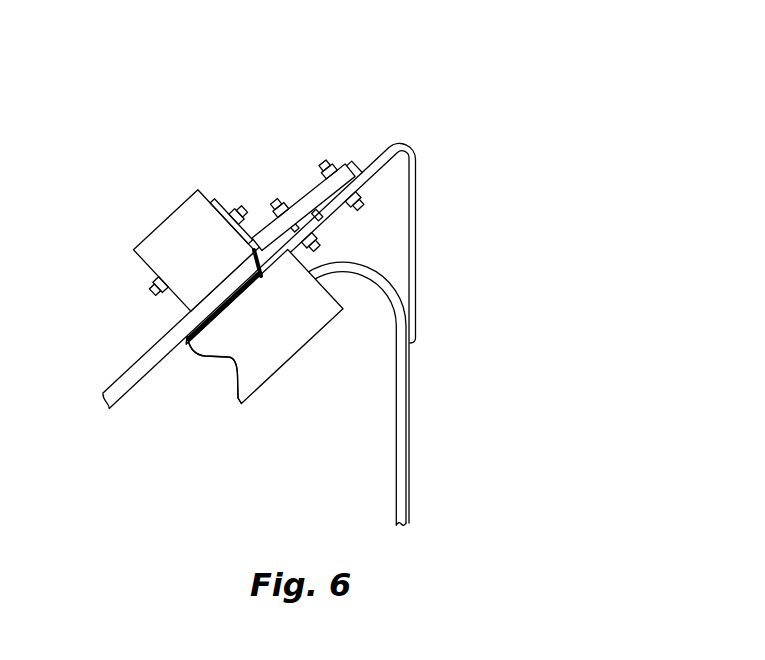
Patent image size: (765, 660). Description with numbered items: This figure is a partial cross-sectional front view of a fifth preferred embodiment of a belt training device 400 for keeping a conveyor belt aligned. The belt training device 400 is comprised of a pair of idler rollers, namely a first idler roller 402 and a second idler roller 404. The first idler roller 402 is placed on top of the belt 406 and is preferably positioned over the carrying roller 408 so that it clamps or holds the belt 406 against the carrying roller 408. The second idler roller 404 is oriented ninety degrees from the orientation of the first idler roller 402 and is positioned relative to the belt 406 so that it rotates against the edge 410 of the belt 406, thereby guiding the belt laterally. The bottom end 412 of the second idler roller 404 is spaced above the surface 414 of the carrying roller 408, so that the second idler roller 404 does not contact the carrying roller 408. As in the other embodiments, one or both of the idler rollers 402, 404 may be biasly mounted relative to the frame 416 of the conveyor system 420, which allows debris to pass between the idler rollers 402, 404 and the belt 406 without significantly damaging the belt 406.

The belt training device 400 is at (343, 271).
The first idler roller 402 is at (174, 212).
The second idler roller 404 is at (311, 174).
The belt 406 is at (137, 361).
The carrying roller 408 is at (290, 358).
The edge 410 is at (257, 255).
The bottom end 412 is at (344, 213).
The surface 414 is at (200, 343).
The frame 416 is at (408, 417).
The conveyor system 420 is at (482, 313).